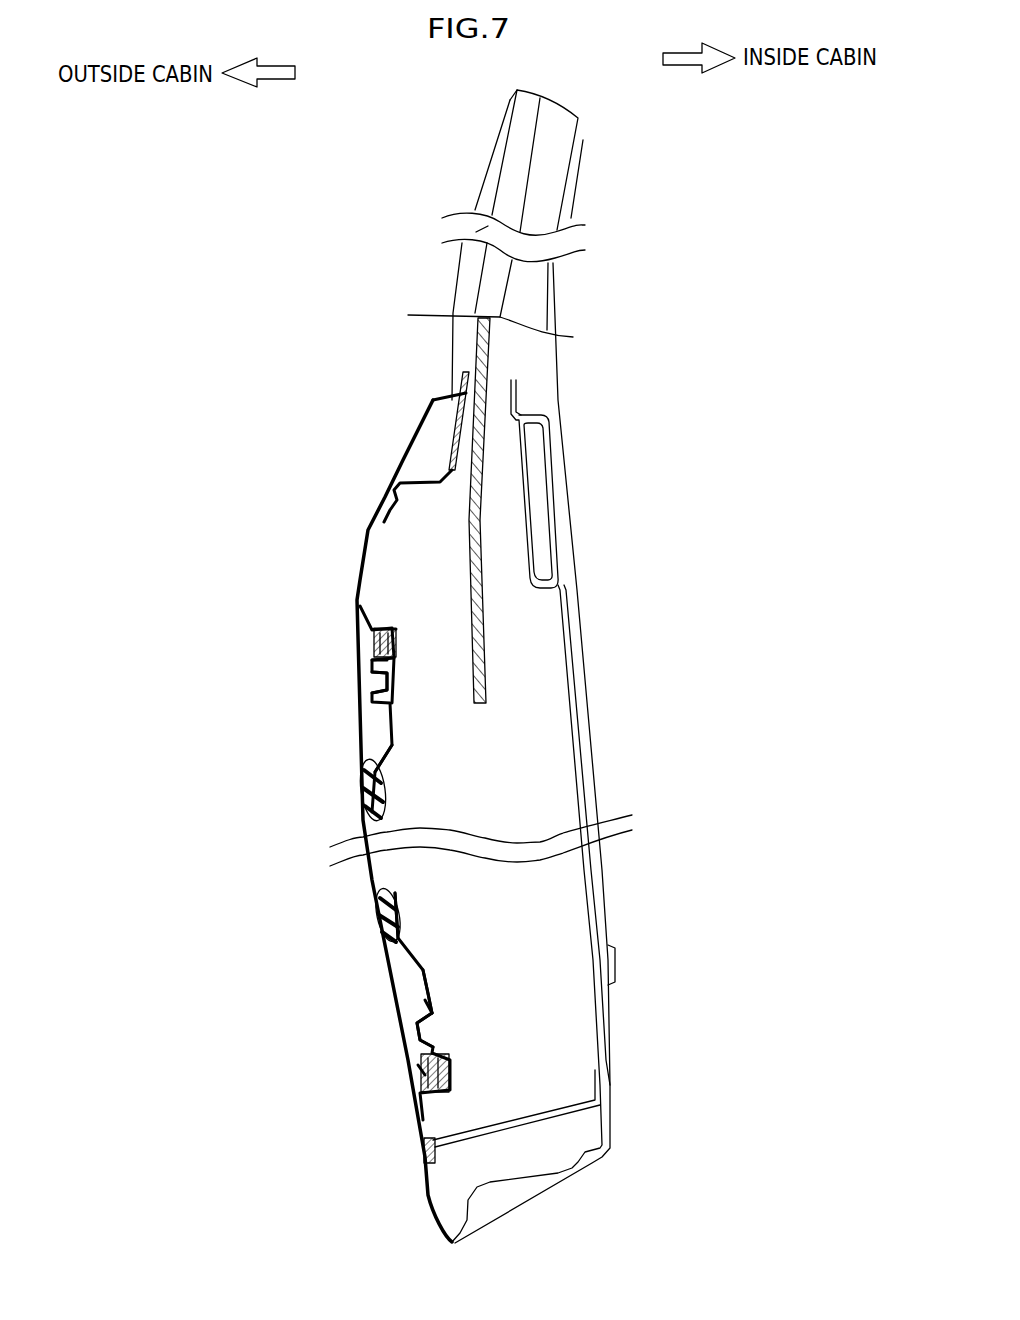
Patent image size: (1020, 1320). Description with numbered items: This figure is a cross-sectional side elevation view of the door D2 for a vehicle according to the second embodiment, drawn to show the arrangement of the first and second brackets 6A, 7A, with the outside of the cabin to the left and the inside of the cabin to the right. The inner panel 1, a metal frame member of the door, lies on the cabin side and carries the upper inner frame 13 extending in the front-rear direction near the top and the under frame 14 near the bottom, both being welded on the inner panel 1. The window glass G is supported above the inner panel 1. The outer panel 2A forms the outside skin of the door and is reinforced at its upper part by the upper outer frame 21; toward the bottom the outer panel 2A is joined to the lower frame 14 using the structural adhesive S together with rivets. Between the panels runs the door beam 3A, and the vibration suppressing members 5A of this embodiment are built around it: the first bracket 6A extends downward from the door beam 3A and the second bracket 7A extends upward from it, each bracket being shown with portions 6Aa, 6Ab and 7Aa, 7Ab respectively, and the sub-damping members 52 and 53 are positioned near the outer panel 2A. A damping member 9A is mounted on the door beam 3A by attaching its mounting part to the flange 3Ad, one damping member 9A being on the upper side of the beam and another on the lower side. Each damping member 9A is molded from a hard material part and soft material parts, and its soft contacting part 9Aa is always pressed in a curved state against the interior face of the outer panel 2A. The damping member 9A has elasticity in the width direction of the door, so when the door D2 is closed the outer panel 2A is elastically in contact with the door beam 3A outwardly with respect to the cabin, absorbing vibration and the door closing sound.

The inner panel 1 is at (577, 677).
The outer panel 2A is at (395, 461).
The upper outer frame 21 is at (453, 437).
The window glass G is at (488, 348).
The upper inner frame 13 is at (543, 560).
The first bracket 6A is at (402, 730).
The bracket inclined portion 6Aa is at (388, 758).
The bracket flange portion 6Ab is at (392, 722).
The damping member 9A is at (374, 640).
The contacting part 9Aa is at (374, 628).
The flange 3Ad is at (372, 653).
The door beam 3A is at (372, 695).
The vibration suppressing members 5A is at (255, 712).
The sub-damping member 52 is at (362, 792).
The sub-damping member 53 is at (378, 917).
The second bracket 7A is at (438, 982).
The lower bracket upper portion 7Aa is at (385, 953).
The lower bracket inclined portion 7Ab is at (432, 997).
The under frame 14 is at (498, 1123).
The structural adhesive S is at (425, 1145).
The door D2 is at (628, 205).